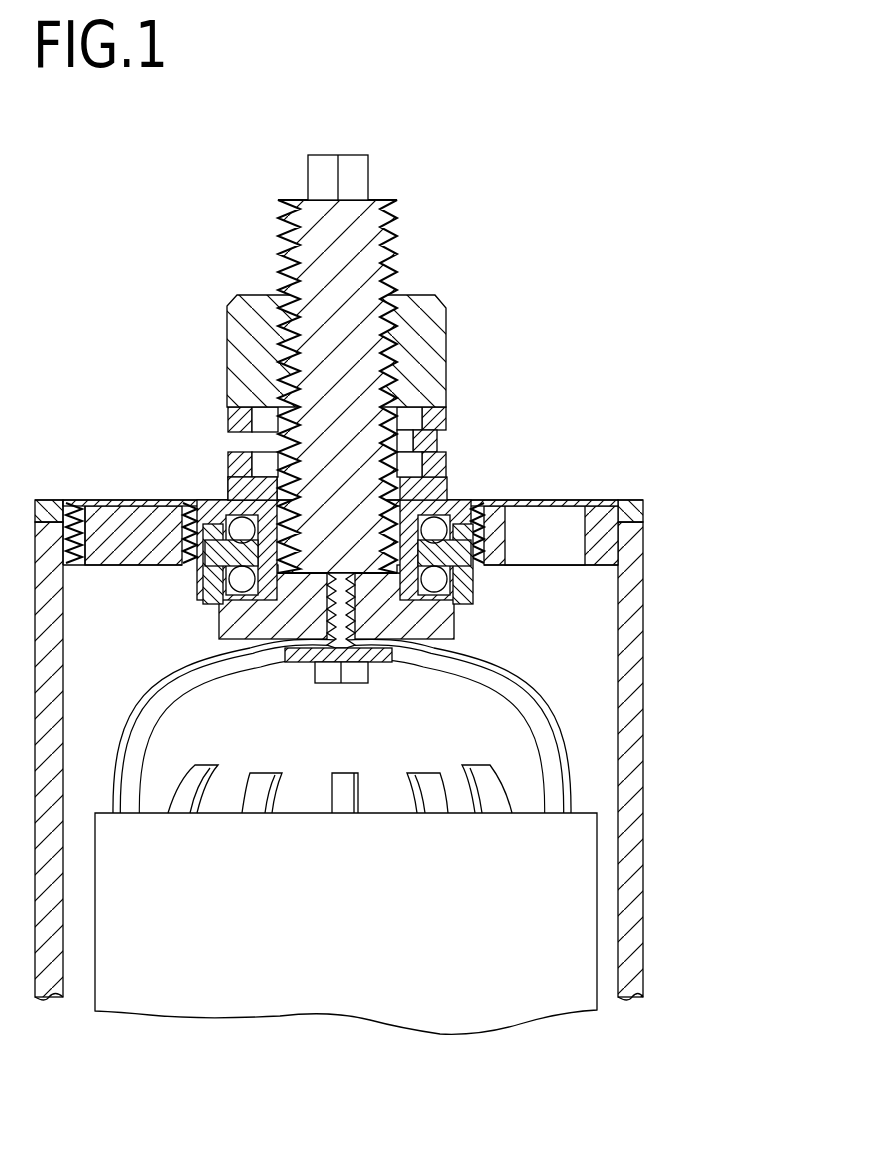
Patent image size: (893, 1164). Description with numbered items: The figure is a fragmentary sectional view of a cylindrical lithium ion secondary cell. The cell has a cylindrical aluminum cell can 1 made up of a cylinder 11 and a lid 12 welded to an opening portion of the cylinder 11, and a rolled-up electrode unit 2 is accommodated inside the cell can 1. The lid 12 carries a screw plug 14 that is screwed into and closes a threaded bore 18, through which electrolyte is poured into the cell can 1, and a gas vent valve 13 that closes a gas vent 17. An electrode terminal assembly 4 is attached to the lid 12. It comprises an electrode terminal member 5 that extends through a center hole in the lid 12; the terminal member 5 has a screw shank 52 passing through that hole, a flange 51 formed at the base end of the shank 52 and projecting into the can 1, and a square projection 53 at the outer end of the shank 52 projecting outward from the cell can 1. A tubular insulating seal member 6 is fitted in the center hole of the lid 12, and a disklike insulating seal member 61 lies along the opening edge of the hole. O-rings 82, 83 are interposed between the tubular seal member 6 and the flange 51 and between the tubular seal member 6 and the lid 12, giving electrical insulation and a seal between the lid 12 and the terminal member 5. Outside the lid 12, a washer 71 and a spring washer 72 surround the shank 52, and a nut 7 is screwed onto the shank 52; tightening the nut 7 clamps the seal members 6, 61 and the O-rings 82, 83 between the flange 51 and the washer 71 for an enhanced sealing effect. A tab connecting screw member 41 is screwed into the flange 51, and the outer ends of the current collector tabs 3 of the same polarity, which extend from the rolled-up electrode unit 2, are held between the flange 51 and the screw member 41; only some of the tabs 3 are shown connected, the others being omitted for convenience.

The cell can 1 is at (382, 709).
The cylinder 11 is at (632, 615).
The lid 12 is at (628, 500).
The gas vent valve 13 is at (560, 500).
The screw plug 14 is at (351, 521).
The gas vent 17 is at (577, 552).
The threaded bore 18 is at (96, 520).
The rolled-up electrode unit 2 is at (374, 931).
The current collector tabs 3 is at (215, 672).
The electrode terminal assembly 4 is at (346, 417).
The tab connecting screw member 41 is at (305, 668).
The electrode terminal member 5 is at (353, 435).
The flange 51 is at (440, 628).
The screw shank 52 is at (281, 276).
The square projection 53 is at (310, 178).
The tubular insulating seal member 6 is at (446, 522).
The disklike insulating seal member 61 is at (232, 490).
The nut 7 is at (432, 333).
The washer 71 is at (232, 462).
The spring washer 72 is at (232, 415).
The O-ring 82 is at (202, 592).
The O-ring 83 is at (205, 558).